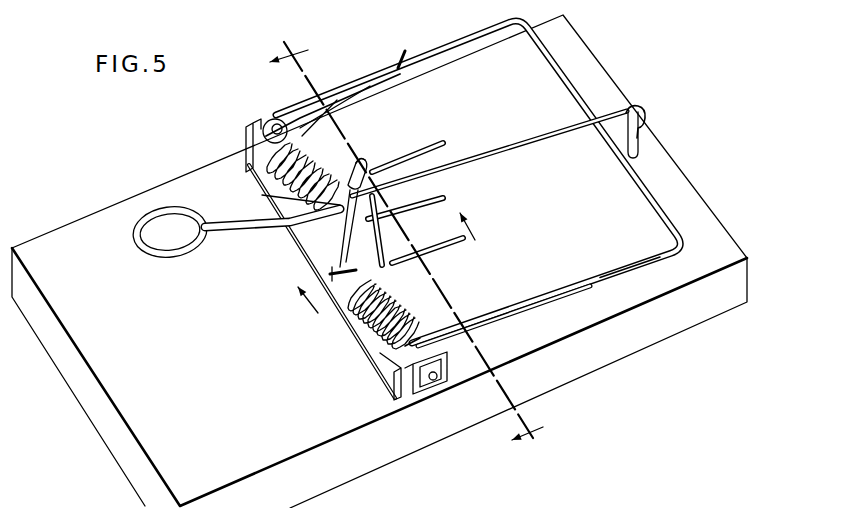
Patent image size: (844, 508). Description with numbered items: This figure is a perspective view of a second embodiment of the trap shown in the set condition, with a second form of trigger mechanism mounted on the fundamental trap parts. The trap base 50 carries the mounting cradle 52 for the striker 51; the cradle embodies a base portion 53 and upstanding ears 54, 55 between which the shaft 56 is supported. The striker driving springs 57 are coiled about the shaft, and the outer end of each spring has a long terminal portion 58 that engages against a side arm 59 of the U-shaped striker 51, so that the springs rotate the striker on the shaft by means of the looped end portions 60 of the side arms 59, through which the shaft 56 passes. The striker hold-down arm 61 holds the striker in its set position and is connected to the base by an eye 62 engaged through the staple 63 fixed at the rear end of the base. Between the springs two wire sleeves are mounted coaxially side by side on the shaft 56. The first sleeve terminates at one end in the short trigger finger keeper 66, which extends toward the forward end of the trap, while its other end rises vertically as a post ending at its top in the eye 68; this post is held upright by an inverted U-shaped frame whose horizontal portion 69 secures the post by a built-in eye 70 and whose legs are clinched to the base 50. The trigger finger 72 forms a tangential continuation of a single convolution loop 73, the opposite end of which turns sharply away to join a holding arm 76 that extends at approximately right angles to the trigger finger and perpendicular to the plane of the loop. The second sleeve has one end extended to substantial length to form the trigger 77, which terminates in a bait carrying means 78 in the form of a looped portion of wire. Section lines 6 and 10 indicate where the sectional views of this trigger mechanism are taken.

The section line 6- 6 is at (408, 240).
The section line 10- 10 is at (384, 265).
The trap base 50 is at (687, 203).
The striker 51 is at (582, 85).
The mounting cradle 52 is at (375, 373).
The base portion 53 is at (390, 397).
The upstanding ear 54 is at (450, 373).
The upstanding ear 55 is at (245, 128).
The shaft 56 is at (412, 343).
The striker driving spring 57 is at (264, 196).
The long terminal portion 58 is at (397, 58).
The side arm 59 is at (652, 262).
The looped end portion 60 is at (268, 122).
The striker hold-down arm 61 is at (613, 115).
The eye 62 is at (647, 120).
The staple 63 is at (641, 143).
The trigger finger keeper 66 is at (345, 300).
The eye 68 is at (350, 183).
The horizontal portion 69 is at (390, 238).
The built-in eye 70 is at (382, 212).
The trigger finger 72 is at (330, 265).
The single convolution loop 73 is at (364, 165).
The holding arm 76 is at (432, 140).
The trigger 77 is at (240, 231).
The bait carrying means 78 is at (172, 258).